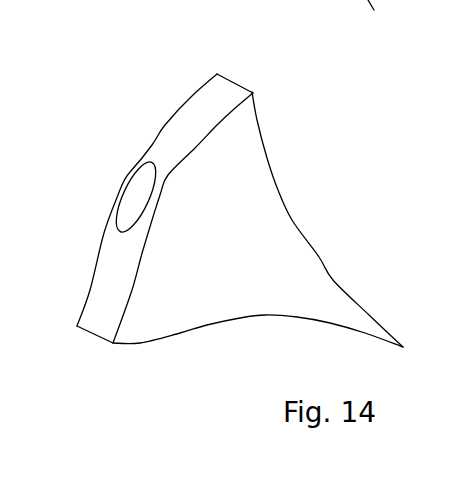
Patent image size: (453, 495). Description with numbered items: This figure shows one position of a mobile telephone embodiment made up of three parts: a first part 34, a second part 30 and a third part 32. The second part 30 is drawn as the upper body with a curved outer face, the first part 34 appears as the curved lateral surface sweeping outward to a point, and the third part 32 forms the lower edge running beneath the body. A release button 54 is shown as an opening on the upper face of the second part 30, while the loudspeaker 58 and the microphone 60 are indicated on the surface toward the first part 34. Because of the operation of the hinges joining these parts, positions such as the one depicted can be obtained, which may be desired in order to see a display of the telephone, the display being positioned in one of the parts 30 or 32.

The second part 30 is at (206, 218).
The third part 32 is at (262, 357).
The first part 34 is at (325, 189).
The release button 54 is at (119, 205).
The loudspeaker 58 is at (300, 266).
The microphone 60 is at (295, 303).